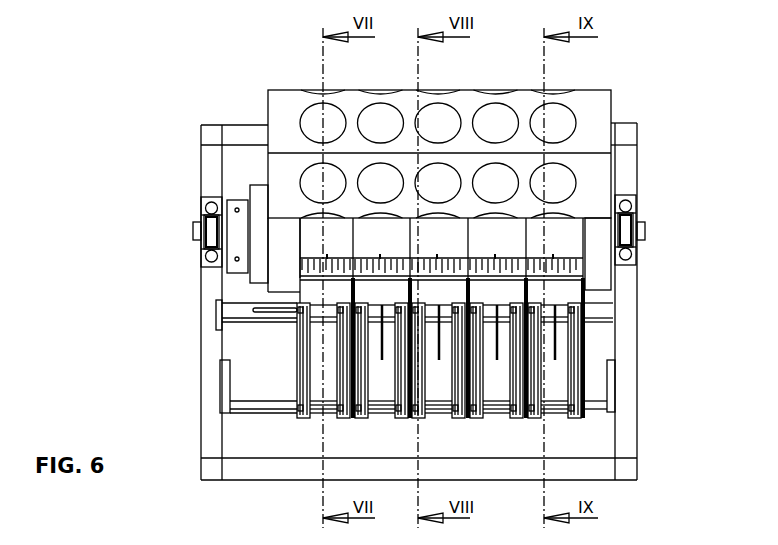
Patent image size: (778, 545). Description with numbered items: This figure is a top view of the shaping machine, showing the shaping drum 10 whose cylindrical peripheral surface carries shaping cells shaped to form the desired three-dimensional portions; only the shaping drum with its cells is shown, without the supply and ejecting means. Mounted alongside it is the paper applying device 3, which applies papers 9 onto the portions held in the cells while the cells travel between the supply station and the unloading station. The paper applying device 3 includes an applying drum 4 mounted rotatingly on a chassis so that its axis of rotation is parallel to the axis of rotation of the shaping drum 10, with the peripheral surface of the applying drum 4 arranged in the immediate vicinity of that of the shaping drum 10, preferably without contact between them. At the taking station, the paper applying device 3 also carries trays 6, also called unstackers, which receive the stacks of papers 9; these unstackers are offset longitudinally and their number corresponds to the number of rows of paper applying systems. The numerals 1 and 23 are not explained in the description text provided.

The block body 1 is at (451, 131).
The paper applying device 3 is at (641, 353).
The applying drum 4 is at (600, 277).
The trays 6 is at (296, 373).
The papers 9 is at (310, 297).
The shaping drum 10 is at (612, 118).
The openings 23 is at (312, 118).